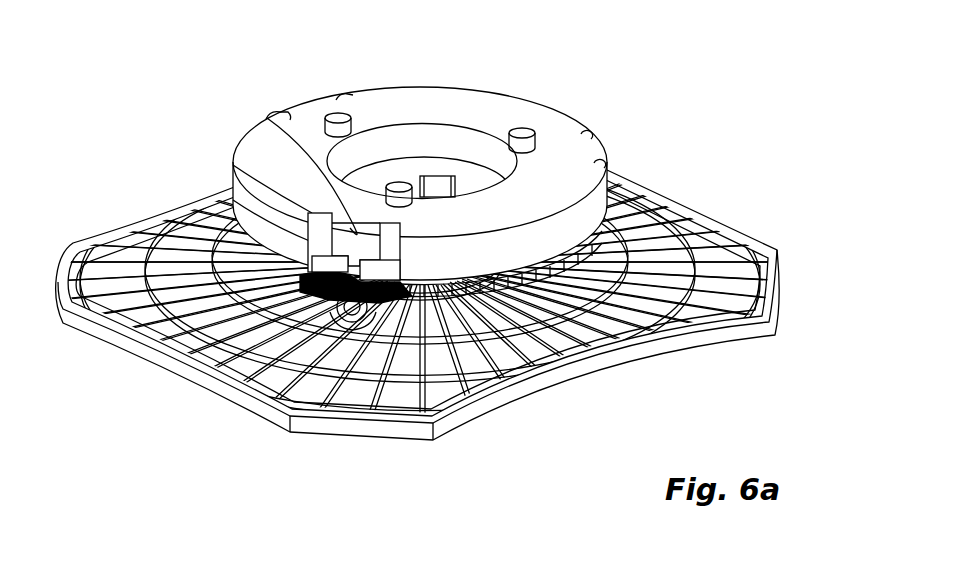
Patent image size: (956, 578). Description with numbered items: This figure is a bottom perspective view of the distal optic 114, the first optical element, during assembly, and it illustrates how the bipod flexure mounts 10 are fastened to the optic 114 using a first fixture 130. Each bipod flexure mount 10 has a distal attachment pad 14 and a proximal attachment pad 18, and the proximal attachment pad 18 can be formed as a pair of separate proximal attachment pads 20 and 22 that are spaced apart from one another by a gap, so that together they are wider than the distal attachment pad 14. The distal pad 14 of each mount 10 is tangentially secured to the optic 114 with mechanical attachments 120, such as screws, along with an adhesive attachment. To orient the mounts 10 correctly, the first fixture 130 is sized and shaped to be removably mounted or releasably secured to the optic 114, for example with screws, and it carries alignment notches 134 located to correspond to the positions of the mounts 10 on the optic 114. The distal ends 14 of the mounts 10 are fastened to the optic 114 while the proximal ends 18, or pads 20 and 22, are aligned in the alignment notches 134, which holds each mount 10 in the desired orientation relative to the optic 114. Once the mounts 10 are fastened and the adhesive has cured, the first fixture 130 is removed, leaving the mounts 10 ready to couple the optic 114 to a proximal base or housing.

The bipod flexure mount 10 is at (230, 370).
The distal attachment pad 14 is at (400, 313).
The proximal attachment pad 18 is at (333, 262).
The proximal attachment pad 20 is at (562, 383).
The proximal attachment pad 22 is at (310, 214).
The distal optic 114 is at (778, 266).
The mechanical attachment 120 is at (352, 320).
The first fixture 130 is at (481, 98).
The alignment notch 134 is at (303, 103).